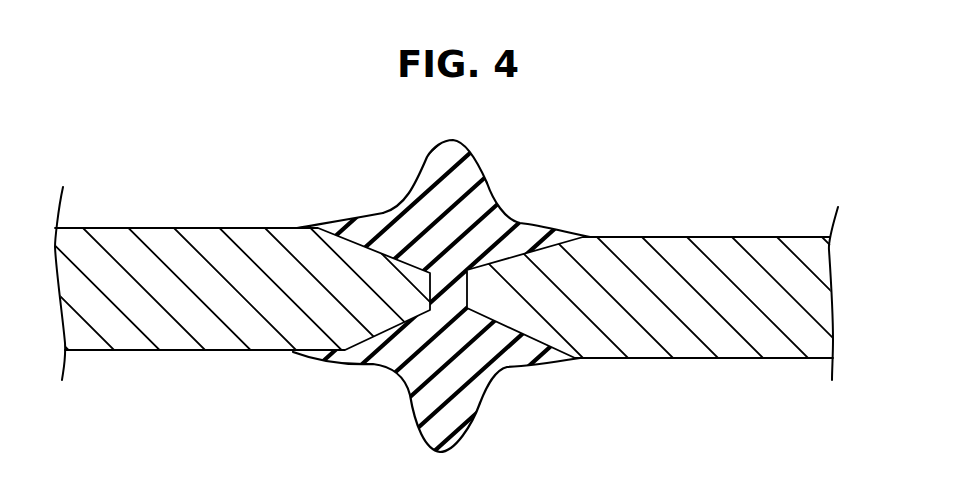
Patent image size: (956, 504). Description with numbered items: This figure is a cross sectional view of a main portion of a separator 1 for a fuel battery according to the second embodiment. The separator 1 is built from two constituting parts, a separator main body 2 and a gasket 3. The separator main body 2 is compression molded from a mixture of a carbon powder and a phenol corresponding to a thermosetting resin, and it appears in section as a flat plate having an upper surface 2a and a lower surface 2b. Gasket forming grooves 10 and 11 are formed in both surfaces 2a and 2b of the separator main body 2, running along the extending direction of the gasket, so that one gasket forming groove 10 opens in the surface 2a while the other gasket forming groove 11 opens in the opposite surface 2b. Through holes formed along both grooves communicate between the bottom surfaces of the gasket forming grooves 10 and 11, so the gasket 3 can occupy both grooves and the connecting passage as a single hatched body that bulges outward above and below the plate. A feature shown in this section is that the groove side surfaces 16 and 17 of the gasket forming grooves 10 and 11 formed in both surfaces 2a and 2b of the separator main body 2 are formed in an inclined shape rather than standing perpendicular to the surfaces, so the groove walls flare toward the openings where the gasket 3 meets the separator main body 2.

The separator 1 is at (472, 262).
The separator main body 2 is at (747, 277).
The surface 2a is at (193, 227).
The surface 2b is at (172, 352).
The gasket 3 is at (472, 262).
The gasket forming groove 10 is at (500, 245).
The gasket forming groove 11 is at (498, 350).
The groove side surface 16 is at (365, 243).
The groove side surface 17 is at (357, 342).